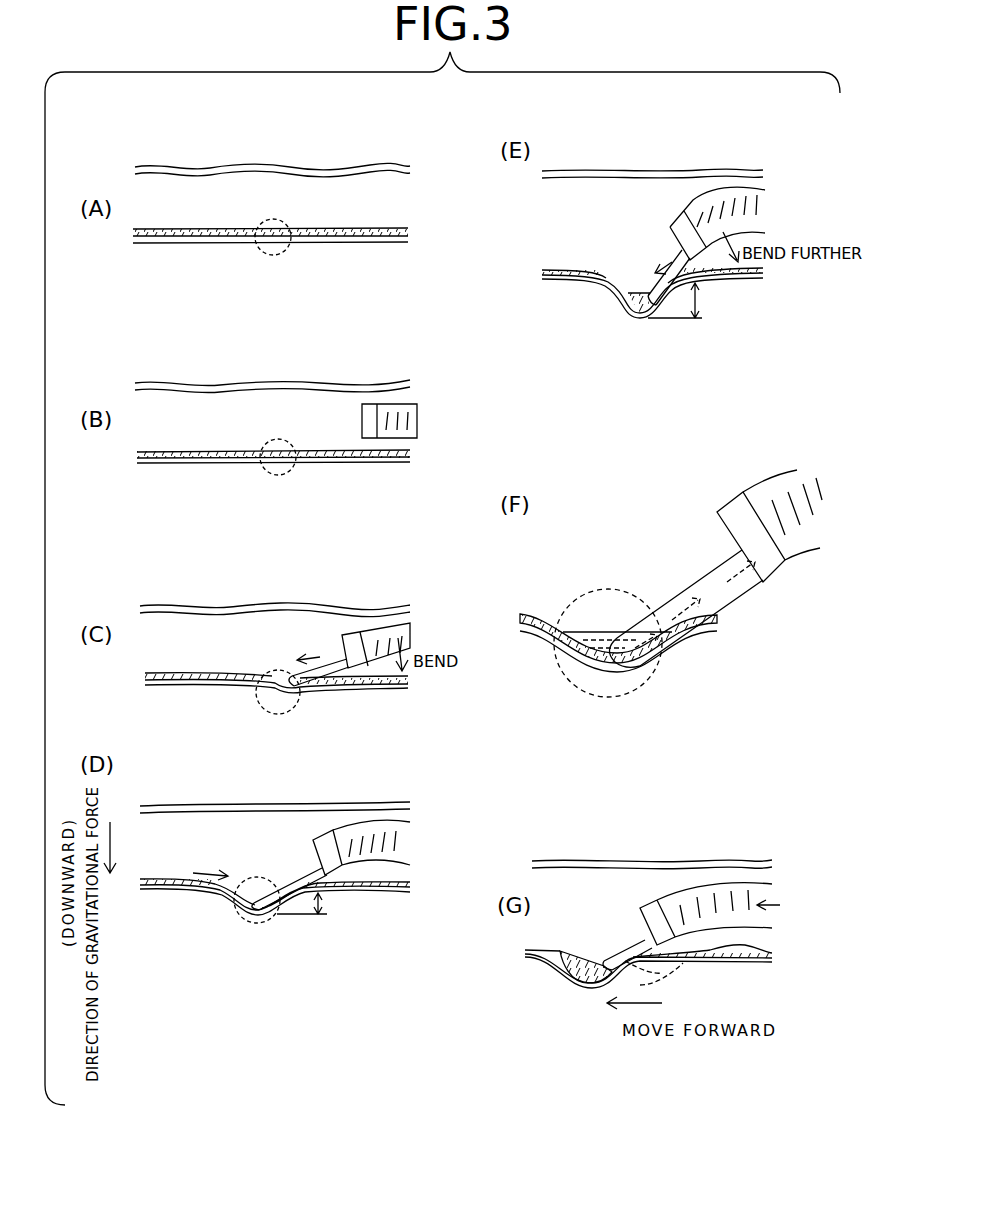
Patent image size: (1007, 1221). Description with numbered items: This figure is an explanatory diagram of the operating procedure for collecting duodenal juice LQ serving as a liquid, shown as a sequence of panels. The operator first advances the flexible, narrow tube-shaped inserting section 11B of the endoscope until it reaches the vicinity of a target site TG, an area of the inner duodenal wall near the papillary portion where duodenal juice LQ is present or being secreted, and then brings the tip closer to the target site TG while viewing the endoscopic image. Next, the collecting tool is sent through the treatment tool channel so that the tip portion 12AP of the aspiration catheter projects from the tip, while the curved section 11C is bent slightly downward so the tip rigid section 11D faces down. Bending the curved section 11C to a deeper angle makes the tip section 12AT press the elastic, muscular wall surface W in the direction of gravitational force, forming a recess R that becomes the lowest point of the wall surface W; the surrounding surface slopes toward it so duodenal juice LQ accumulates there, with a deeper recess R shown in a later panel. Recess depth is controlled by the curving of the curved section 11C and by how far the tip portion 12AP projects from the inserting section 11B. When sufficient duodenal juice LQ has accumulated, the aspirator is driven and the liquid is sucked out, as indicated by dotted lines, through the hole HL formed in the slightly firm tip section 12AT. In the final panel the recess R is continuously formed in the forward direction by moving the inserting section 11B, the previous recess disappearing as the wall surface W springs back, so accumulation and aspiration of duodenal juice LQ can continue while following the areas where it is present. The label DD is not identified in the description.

The duodenal wall (opposing tissue) DD is at (342, 165).
The duodenal juice LQ is at (410, 230).
The wall surface W is at (150, 245).
The target site TG is at (283, 252).
The inserting section 11B is at (412, 394).
The curved section 11C is at (417, 410).
The tip rigid section 11D is at (370, 408).
The tip portion 12AP is at (330, 658).
The tip section 12AT is at (287, 680).
The hole HL is at (240, 912).
The recess R is at (497, 600).